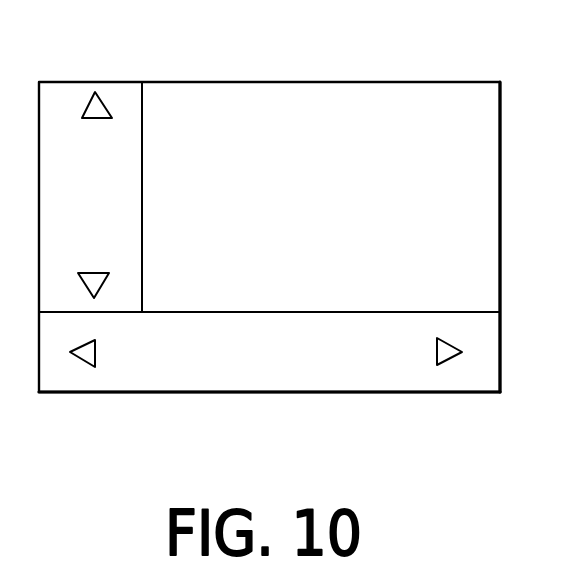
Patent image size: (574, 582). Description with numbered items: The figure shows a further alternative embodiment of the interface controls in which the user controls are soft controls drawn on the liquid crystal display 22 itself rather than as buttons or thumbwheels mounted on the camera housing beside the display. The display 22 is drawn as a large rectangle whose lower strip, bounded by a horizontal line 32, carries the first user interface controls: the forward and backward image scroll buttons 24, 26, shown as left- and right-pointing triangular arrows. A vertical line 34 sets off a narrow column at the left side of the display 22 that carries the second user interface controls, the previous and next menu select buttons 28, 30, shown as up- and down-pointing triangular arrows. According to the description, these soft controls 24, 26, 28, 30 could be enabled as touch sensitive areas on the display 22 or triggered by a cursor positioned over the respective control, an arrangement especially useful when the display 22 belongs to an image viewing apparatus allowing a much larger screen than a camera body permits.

The liquid crystal display 22 is at (343, 82).
The forward image scroll button 24 is at (85, 365).
The backward image scroll button 26 is at (447, 364).
The previous menu select button 28 is at (106, 112).
The next menu select button 30 is at (97, 273).
The horizontal scroll bar divider (32') 32 is at (242, 312).
The vertical scroll bar divider (34') 34 is at (142, 175).